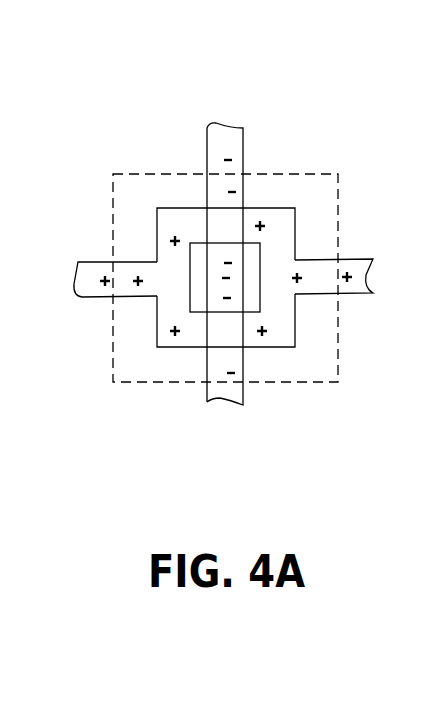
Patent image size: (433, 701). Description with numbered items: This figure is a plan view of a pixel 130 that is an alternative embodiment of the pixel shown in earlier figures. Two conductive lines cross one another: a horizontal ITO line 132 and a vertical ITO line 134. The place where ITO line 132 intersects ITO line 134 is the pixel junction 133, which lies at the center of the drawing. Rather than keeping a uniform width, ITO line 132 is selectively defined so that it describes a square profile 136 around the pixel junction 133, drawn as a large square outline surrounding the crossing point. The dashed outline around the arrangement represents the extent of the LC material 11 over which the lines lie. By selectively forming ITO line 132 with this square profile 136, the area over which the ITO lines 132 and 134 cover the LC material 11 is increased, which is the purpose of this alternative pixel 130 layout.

The pixel 130 is at (115, 33).
The LC material 11 is at (300, 174).
The ITO line 132 is at (95, 262).
The ITO line 134 is at (243, 148).
The square profile 136 is at (183, 208).
The pixel junction 133 is at (255, 305).